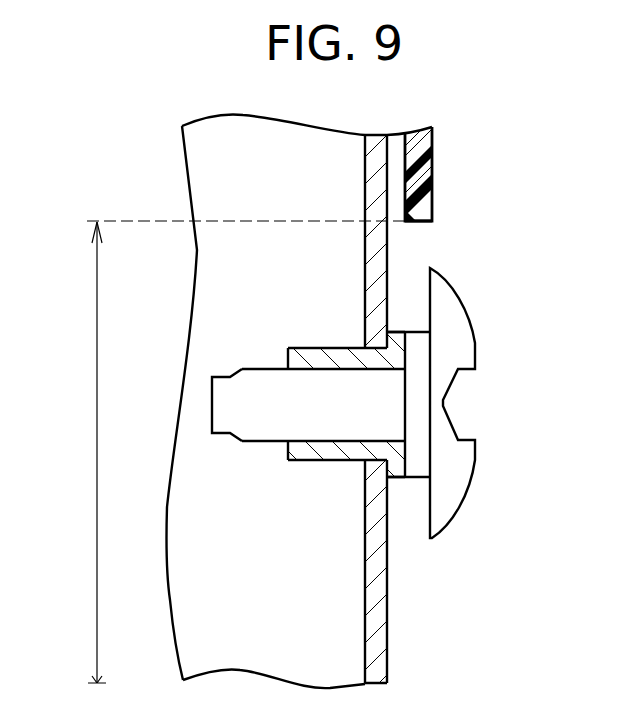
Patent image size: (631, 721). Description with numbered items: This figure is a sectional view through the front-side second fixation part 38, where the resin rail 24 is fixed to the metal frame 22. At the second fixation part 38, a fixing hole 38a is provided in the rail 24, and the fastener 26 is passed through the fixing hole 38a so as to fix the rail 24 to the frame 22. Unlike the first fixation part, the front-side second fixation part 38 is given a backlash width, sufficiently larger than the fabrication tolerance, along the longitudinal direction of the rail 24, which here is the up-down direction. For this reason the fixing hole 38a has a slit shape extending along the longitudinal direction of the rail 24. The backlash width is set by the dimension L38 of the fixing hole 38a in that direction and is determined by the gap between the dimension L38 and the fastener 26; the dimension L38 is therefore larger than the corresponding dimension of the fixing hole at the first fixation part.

The second fixation part 38 is at (547, 124).
The rail 24 is at (421, 187).
The fixing hole 38a is at (421, 223).
The fastener 26 is at (467, 345).
The frame 22 is at (388, 600).
The dimension of the fixing hole L38 is at (221, 452).